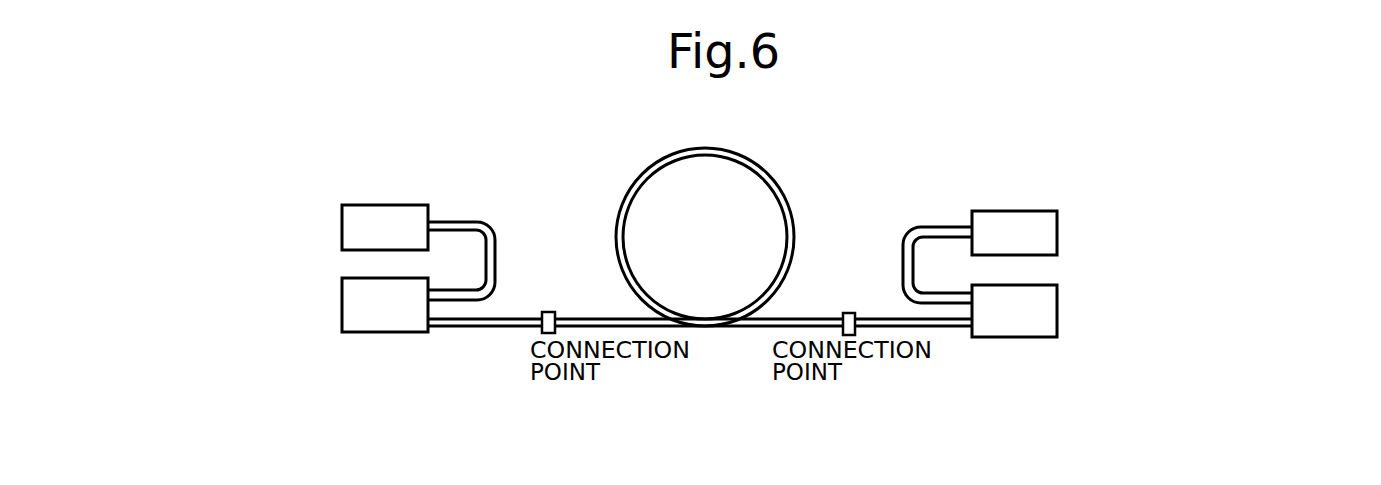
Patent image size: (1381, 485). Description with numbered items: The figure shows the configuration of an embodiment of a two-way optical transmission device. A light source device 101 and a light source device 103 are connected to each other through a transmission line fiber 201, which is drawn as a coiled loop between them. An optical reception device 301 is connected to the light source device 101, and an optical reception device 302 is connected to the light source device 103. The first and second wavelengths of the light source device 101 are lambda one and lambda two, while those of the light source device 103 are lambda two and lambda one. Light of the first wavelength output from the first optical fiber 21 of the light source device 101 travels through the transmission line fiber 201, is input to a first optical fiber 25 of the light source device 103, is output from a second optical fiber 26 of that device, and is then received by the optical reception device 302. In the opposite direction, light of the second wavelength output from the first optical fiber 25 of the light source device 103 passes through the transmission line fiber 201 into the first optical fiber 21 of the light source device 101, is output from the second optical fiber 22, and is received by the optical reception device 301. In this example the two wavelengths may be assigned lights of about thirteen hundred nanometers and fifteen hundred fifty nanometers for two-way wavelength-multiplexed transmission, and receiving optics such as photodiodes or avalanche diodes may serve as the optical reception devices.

The optical reception device 301 is at (248, 211).
The light source device 101 is at (262, 320).
The first optical fiber 21 is at (512, 174).
The second optical fiber 22 is at (490, 302).
The transmission line fiber 201 is at (637, 181).
The optical reception device 302 is at (1171, 218).
The light source device 103 is at (1162, 326).
The first optical fiber 25 is at (917, 226).
The second optical fiber 26 is at (952, 338).